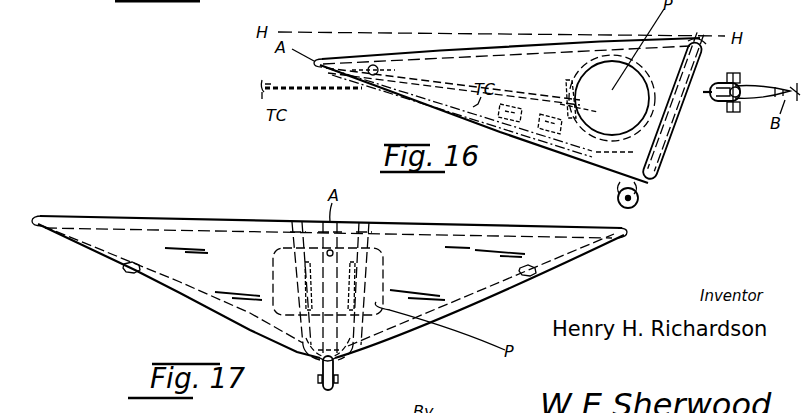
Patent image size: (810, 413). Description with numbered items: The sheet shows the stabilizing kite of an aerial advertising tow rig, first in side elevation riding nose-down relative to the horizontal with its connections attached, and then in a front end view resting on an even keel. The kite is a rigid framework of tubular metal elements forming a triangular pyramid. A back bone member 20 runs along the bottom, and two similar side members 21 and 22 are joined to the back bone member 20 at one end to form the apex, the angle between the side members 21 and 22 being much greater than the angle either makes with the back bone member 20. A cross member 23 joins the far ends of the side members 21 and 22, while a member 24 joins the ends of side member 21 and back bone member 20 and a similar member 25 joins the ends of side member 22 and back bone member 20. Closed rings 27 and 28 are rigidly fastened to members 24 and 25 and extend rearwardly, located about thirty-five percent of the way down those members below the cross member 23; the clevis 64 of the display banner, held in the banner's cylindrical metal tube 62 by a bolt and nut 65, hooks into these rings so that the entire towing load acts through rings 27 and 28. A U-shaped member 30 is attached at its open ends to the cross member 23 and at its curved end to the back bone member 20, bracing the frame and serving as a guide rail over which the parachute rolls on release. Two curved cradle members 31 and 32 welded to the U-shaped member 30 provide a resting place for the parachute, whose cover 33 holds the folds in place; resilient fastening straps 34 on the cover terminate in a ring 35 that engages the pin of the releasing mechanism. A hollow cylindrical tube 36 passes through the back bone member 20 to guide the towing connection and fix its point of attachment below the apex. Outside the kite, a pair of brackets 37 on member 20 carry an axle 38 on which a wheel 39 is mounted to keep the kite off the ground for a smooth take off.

In FIG. 16, the back bone member 20 is at (532, 141).
In FIG. 17, the back bone member 20 is at (333, 332).
In FIG. 16, the side member 21 is at (490, 54).
In FIG. 17, the side member 21 is at (464, 224).
In FIG. 17, the side member 22 is at (219, 217).
In FIG. 16, the cross member 23 is at (700, 42).
In FIG. 17, the cross member 23 is at (158, 228).
In FIG. 16, the member joining 21 and 20 24 is at (665, 132).
In FIG. 17, the member joining 21 and 20 24 is at (460, 306).
In FIG. 17, the member joining 22 and 20 25 is at (178, 298).
In FIG. 16, the closed ring 27 is at (705, 90).
In FIG. 17, the closed ring 27 is at (527, 278).
In FIG. 17, the closed ring 28 is at (130, 270).
In FIG. 16, the U-shaped member 30 is at (654, 117).
In FIG. 17, the U-shaped member 30 is at (308, 348).
In FIG. 16, the curved cradle member 31 is at (611, 143).
In FIG. 17, the curved cradle member 31 is at (347, 275).
In FIG. 17, the curved cradle member 32 is at (300, 272).
In FIG. 16, the parachute cover 33 is at (614, 60).
In FIG. 16, the resilient fastening straps 34 is at (570, 100).
In FIG. 16, the ring 35 is at (560, 118).
In FIG. 16, the hollow cylindrical tube 36 is at (413, 86).
In FIG. 16, the brackets 37 is at (620, 190).
In FIG. 16, the axle 38 is at (639, 198).
In FIG. 17, the axle 38 is at (335, 382).
In FIG. 16, the wheel 39 is at (634, 203).
In FIG. 17, the wheel 39 is at (326, 393).
In FIG. 16, the cylindrical metal tube 62 is at (763, 86).
In FIG. 16, the clevis 64 is at (718, 101).
In FIG. 16, the bolt and nut 65 is at (742, 73).